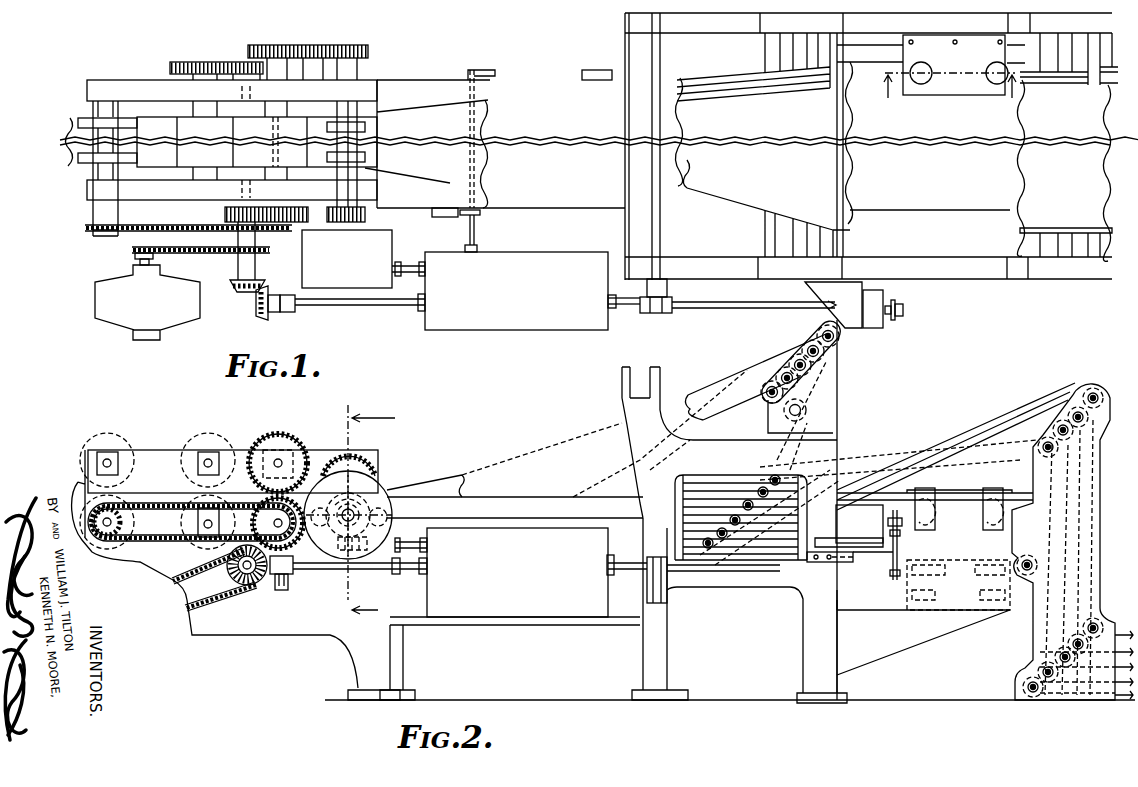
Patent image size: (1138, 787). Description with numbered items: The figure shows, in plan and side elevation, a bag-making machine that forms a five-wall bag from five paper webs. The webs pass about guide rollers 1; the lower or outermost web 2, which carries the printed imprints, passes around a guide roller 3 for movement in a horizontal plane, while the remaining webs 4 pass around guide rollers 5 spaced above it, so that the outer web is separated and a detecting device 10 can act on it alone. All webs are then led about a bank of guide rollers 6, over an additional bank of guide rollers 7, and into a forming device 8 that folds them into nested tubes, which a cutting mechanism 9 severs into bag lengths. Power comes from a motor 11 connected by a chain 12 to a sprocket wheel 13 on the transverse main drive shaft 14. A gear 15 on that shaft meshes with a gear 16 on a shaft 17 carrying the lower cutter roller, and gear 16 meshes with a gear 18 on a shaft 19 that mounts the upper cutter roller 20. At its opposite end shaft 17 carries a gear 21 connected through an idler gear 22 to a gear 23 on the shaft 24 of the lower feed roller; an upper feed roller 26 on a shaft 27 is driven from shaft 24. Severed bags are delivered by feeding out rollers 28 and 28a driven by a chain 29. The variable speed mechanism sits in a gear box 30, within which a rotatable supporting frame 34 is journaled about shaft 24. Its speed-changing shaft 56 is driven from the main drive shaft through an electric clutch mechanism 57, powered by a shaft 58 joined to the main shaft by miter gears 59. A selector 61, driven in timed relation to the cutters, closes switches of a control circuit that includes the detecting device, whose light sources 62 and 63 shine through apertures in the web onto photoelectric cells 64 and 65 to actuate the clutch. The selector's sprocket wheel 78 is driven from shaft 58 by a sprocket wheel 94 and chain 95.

In FIG. 2, the guide rollers 1 is at (1061, 652).
In FIG. 2, the outer web 2 is at (1028, 662).
In FIG. 1, the guide roller 3 is at (949, 95).
In FIG. 2, the guide roller 3 is at (1018, 564).
In FIG. 2, the remaining webs 4 is at (1053, 488).
In FIG. 1, the guide rollers 5 is at (1102, 47).
In FIG. 2, the guide rollers 5 is at (1085, 389).
In FIG. 2, the bank of guide rollers 6 is at (742, 484).
In FIG. 1, the bank of guide rollers 7 is at (838, 230).
In FIG. 2, the bank of guide rollers 7 is at (856, 344).
In FIG. 1, the forming device 8 is at (408, 109).
In FIG. 2, the forming device 8 is at (720, 374).
In FIG. 1, the cutting mechanism 9 is at (282, 124).
In FIG. 1, the detecting device 10 is at (954, 95).
In FIG. 2, the detecting device 10 is at (947, 493).
In FIG. 1, the motor 11 is at (192, 320).
In FIG. 1, the chain 12 is at (193, 256).
In FIG. 2, the chain 12 is at (196, 598).
In FIG. 2, the sprocket wheel 13 is at (244, 584).
In FIG. 1, the main drive shaft 14 is at (256, 268).
In FIG. 1, the gear 15 is at (224, 214).
In FIG. 2, the gear 16 is at (344, 560).
In FIG. 2, the shaft 17 is at (278, 522).
In FIG. 1, the gear 18 is at (291, 206).
In FIG. 2, the gear 18 is at (320, 468).
In FIG. 1, the shaft 19 is at (284, 172).
In FIG. 2, the shaft 19 is at (278, 463).
In FIG. 1, the upper cutter roller 20 is at (238, 127).
In FIG. 1, the gear 21 is at (270, 62).
In FIG. 1, the idler gear 22 is at (310, 45).
In FIG. 1, the gear 23 is at (362, 46).
In FIG. 1, the shaft 24 is at (368, 68).
In FIG. 1, the upper feed roller 26 is at (370, 129).
In FIG. 1, the shaft 27 is at (373, 166).
In FIG. 1, the feeding out roller 28 is at (78, 162).
In FIG. 2, the feeding out roller 28 is at (106, 450).
In FIG. 2, the feeding out roller 28a is at (82, 490).
In FIG. 2, the chain 29 is at (140, 542).
In FIG. 1, the gear box 30 is at (384, 243).
In FIG. 1, the supporting member or frame 34 is at (366, 216).
In FIG. 1, the shaft 56 is at (402, 268).
In FIG. 2, the shaft 56 is at (415, 543).
In FIG. 1, the clutch mechanism 57 is at (516, 291).
In FIG. 2, the clutch mechanism 57 is at (517, 572).
In FIG. 1, the shaft 58 is at (358, 308).
In FIG. 2, the shaft 58 is at (372, 572).
In FIG. 1, the miter gears 59 is at (246, 302).
In FIG. 2, the miter gears 59 is at (283, 585).
In FIG. 1, the selector 61 is at (886, 290).
In FIG. 2, the selector 61 is at (868, 522).
In FIG. 2, the light source 62 is at (934, 520).
In FIG. 2, the light source 63 is at (1002, 520).
In FIG. 2, the photoelectric cell 64 is at (932, 608).
In FIG. 2, the photoelectric cell 65 is at (981, 596).
In FIG. 2, the sprocket wheel 78 is at (900, 531).
In FIG. 2, the sprocket wheel 94 is at (893, 578).
In FIG. 2, the chain 95 is at (888, 563).